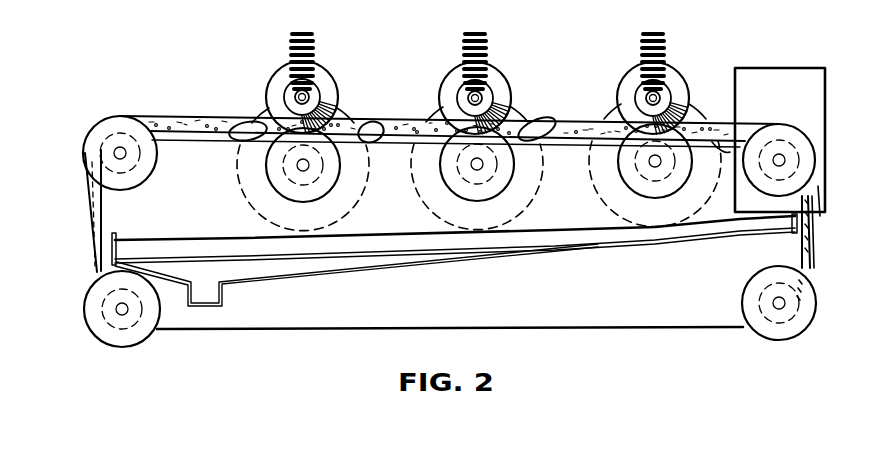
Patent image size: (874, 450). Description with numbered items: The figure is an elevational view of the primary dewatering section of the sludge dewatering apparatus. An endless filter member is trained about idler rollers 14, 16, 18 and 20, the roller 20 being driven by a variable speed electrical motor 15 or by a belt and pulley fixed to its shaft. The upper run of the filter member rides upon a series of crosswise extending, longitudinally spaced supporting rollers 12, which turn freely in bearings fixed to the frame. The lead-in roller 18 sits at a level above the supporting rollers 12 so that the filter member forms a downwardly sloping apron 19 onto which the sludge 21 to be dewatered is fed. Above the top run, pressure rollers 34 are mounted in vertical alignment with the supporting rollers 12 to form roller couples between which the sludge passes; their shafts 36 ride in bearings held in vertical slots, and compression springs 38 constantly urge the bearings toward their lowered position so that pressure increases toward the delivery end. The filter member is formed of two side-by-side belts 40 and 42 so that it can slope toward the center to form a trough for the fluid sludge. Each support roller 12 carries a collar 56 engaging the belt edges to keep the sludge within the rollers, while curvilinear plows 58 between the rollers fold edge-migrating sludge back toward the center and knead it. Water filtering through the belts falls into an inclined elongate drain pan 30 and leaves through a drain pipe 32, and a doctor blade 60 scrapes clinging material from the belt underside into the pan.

The supporting rollers 12 is at (341, 165).
The idler roller 14 is at (806, 318).
The variable speed electrical motor 15 is at (816, 117).
The idler roller 16 is at (137, 338).
The lead-in roller 18 is at (142, 178).
The apron 19 is at (209, 139).
The driven roller 20 is at (813, 157).
The sludge 21 is at (193, 122).
The drain pan 30 is at (578, 245).
The drain pipe 32 is at (210, 306).
The pressure rollers 34 is at (327, 80).
The shafts 36 is at (313, 97).
The compression springs 38 is at (310, 44).
The belt 40 is at (800, 249).
The belt 42 is at (811, 233).
The collar 56 is at (280, 226).
The plows 58 is at (253, 140).
The doctor blade 60 is at (712, 142).